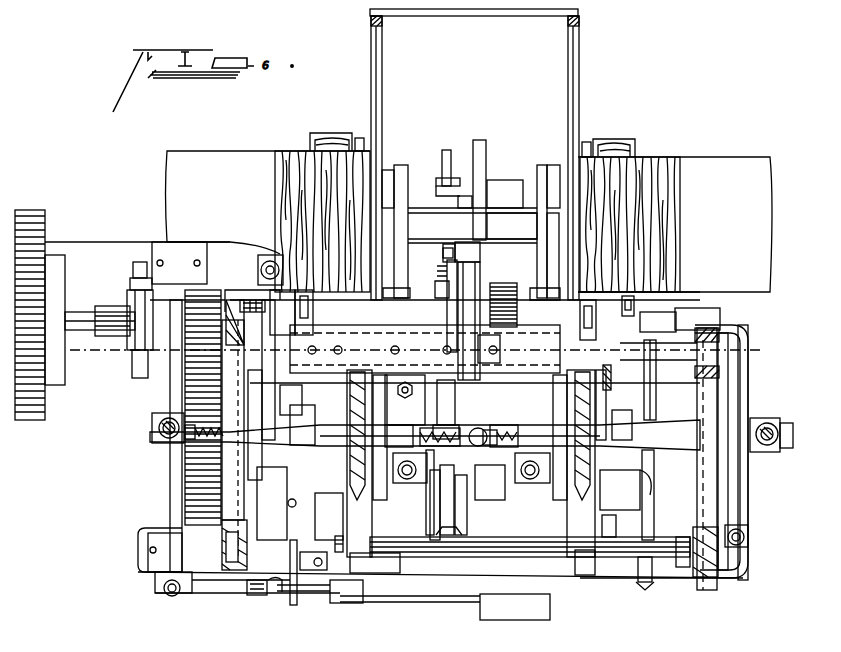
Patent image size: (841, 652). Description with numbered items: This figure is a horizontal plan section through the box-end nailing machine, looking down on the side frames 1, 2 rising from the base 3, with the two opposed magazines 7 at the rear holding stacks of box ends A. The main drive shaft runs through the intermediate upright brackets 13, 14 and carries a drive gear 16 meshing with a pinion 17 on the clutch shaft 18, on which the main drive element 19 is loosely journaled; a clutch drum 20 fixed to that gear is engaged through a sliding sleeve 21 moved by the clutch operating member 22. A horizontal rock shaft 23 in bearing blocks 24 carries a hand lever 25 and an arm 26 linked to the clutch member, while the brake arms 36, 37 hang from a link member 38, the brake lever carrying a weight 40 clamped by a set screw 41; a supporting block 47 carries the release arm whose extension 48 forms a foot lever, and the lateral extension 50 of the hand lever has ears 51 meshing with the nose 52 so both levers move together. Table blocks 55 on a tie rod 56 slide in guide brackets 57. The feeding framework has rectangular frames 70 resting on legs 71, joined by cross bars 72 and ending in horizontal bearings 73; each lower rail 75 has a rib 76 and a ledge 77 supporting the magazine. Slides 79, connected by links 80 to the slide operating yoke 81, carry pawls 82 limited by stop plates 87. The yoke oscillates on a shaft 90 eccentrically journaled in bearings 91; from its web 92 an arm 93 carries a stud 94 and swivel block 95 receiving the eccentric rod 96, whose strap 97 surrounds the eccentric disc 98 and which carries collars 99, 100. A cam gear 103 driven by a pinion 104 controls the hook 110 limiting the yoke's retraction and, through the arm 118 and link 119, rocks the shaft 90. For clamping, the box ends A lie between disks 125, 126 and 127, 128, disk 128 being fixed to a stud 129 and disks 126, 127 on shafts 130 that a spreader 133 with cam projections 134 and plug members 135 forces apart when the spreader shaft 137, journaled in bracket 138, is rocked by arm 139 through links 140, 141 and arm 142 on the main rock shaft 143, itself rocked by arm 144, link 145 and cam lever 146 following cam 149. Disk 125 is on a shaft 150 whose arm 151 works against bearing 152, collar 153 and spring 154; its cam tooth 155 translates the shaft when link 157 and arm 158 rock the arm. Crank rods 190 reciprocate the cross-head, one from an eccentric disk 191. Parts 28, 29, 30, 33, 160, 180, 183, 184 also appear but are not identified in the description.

The side frame 1 is at (238, 565).
The side frame 2 is at (705, 578).
The base 3 is at (742, 566).
The magazine 7 is at (245, 151).
The box end A is at (292, 193).
The upright bracket 13 is at (398, 425).
The upright bracket 14 is at (527, 530).
The drive gear 16 is at (148, 540).
The pinion 17 is at (182, 290).
The clutch shaft 18 is at (72, 310).
The main drive element 19 is at (45, 213).
The clutch drum 20 is at (60, 258).
The sliding sleeve 21 is at (110, 306).
The clutch operating member 22 is at (136, 274).
The rock shaft 23 is at (190, 470).
The bearing block 24 is at (182, 245).
The hand lever 25 is at (162, 588).
The arm 26 is at (160, 359).
The housing 28 is at (225, 290).
The bearing 29 is at (266, 263).
The bolt 30 is at (290, 566).
The stud 33 is at (265, 262).
The brake arm 36 is at (275, 400).
The brake arm 37 is at (282, 290).
The link member 38 is at (252, 300).
The weight 40 is at (280, 528).
The set screw 41 is at (287, 505).
The supporting block 47 is at (360, 578).
The foot lever 48 is at (530, 618).
The lateral extension 50 is at (222, 594).
The ears 51 is at (250, 596).
The nose 52 is at (278, 592).
The table block 55 is at (372, 565).
The tie rod 56 is at (650, 580).
The guide bracket 57 is at (682, 570).
The rectangular frame 70 is at (371, 20).
The leg 71 is at (315, 133).
The cross bar 72 is at (495, 15).
The horizontal bearing 73 is at (400, 485).
The lower horizontal rail 75 is at (372, 80).
The longitudinal rib 76 is at (360, 138).
The lateral ledge 77 is at (345, 140).
The slide 79 is at (400, 260).
The link 80 is at (398, 290).
The slide operating yoke 81 is at (404, 272).
The pawl 82 is at (358, 306).
The stop plate 87 is at (390, 356).
The shaft 90 is at (510, 185).
The bearing 91 is at (398, 172).
The transverse web 92 is at (530, 224).
The arm 93 is at (463, 200).
The stud 94 is at (447, 152).
The swivel block 95 is at (460, 190).
The eccentric rod 96 is at (445, 425).
The eccentric strap 97 is at (445, 540).
The eccentric disc 98 is at (428, 540).
The collar 99 is at (438, 180).
The collar 100 is at (487, 222).
The gear 103 is at (528, 298).
The pinion 104 is at (483, 500).
The hook 110 is at (489, 146).
The arm 118 is at (465, 500).
The link 119 is at (448, 540).
The circular disk 125 is at (368, 520).
The circular disk 126 is at (378, 530).
The circular disk 127 is at (572, 530).
The circular disk 128 is at (600, 392).
The stud 129 is at (620, 430).
The shaft 130 is at (295, 505).
The spreader cam element 133 is at (436, 545).
The cam projection 134 is at (430, 448).
The plug member 135 is at (483, 450).
The spreader shaft 137 is at (478, 290).
The bracket 138 is at (478, 340).
The arm 139 is at (468, 250).
The link 140 is at (443, 255).
The link 141 is at (444, 244).
The arm 142 is at (448, 318).
The main rock shaft 143 is at (697, 393).
The arm 144 is at (662, 372).
The link 145 is at (655, 513).
The cam lever 146 is at (652, 492).
The cam 149 is at (648, 524).
The shaft 150 is at (220, 442).
The arm 151 is at (300, 430).
The bearing 152 is at (245, 455).
The collar 153 is at (192, 432).
The coil spring 154 is at (218, 440).
The cam tooth 155 is at (290, 421).
The link 157 is at (315, 530).
The arm 158 is at (275, 375).
The bolt 160 is at (338, 538).
The wedge 180 is at (612, 378).
The screw 183 is at (632, 299).
The block 184 is at (636, 321).
The crank rod 190 is at (152, 428).
The eccentric disk 191 is at (755, 442).